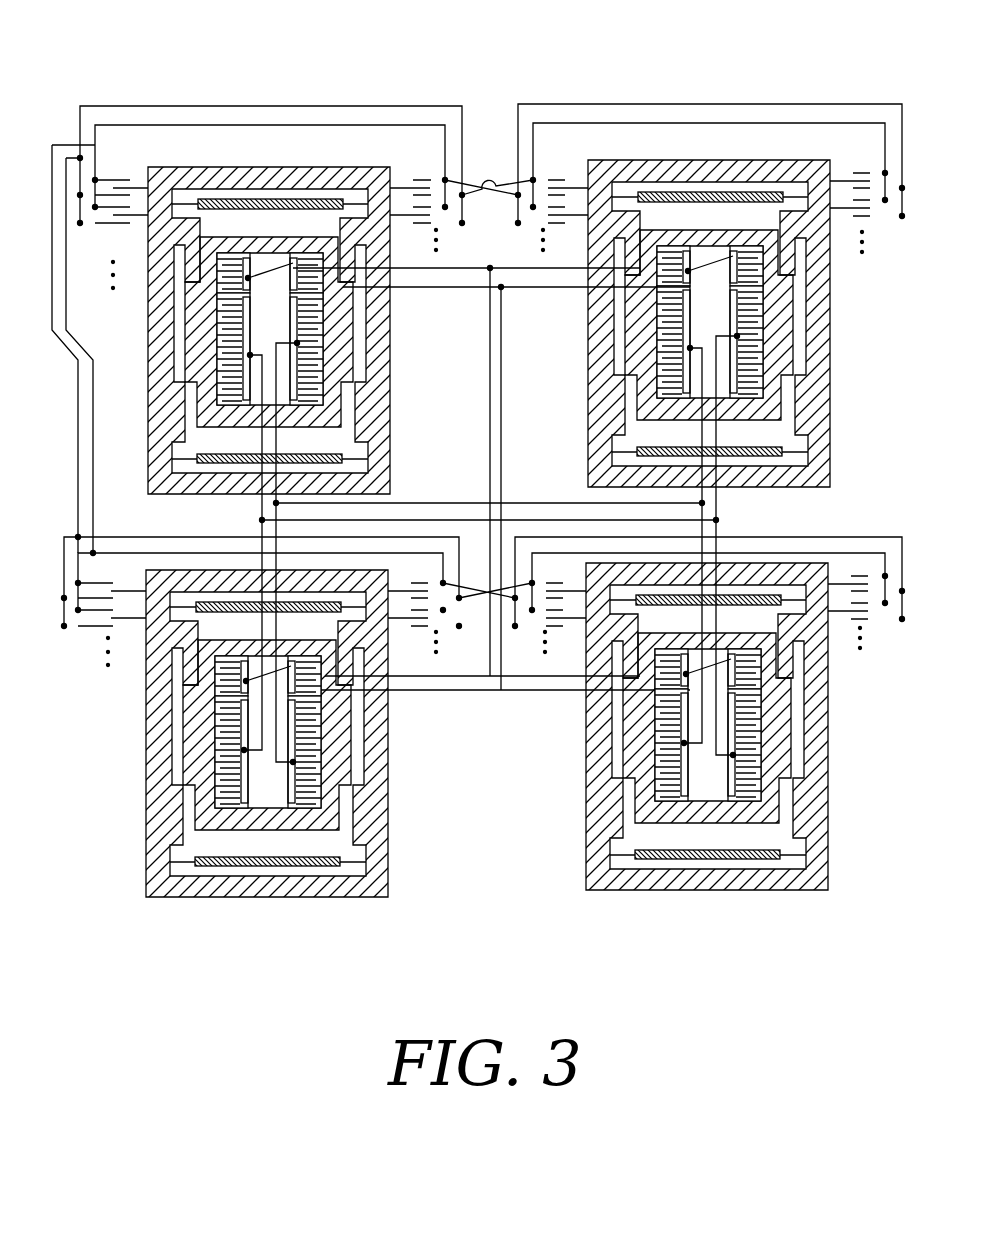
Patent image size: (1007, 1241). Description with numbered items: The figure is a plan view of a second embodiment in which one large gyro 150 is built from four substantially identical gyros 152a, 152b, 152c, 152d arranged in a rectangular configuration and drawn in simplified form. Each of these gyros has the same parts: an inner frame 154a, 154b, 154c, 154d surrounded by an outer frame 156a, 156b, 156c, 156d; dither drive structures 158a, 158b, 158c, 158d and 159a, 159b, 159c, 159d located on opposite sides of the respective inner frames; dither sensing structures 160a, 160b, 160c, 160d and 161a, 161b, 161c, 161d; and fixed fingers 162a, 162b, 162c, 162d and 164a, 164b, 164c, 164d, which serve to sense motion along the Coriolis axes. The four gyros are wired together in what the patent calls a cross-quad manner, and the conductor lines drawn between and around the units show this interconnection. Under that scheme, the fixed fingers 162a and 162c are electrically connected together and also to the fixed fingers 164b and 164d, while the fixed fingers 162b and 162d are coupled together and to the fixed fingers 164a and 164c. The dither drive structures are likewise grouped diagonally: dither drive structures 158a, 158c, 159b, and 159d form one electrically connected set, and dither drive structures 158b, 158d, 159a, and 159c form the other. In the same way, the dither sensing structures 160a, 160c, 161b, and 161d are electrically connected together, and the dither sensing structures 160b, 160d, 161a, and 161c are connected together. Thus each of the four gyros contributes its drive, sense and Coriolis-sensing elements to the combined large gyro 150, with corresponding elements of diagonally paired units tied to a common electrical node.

The large gyro 150 is at (544, 38).
The gyro 152a is at (354, 84).
The gyro 152b is at (257, 912).
The gyro 152c is at (675, 912).
The gyro 152d is at (742, 82).
The inner frame 154a is at (243, 240).
The inner frame 154b is at (290, 648).
The inner frame 154c is at (738, 642).
The inner frame 154d is at (730, 232).
The outer frame 156a is at (392, 352).
The outer frame 156b is at (392, 760).
The outer frame 156c is at (830, 762).
The outer frame 156d is at (832, 340).
The dither drive structure 158a is at (343, 241).
The dither drive structure 158b is at (217, 668).
The dither drive structure 158c is at (655, 702).
The dither drive structure 158d is at (590, 250).
The dither drive structure 159a is at (293, 263).
The dither drive structure 159b is at (297, 677).
The dither drive structure 159c is at (730, 655).
The dither drive structure 159d is at (740, 252).
The dither sensing structure 160a is at (217, 302).
The dither sensing structure 160b is at (215, 727).
The dither sensing structure 160c is at (655, 782).
The dither sensing structure 160d is at (655, 305).
The dither sensing structure 161a is at (325, 322).
The dither sensing structure 161b is at (300, 778).
The dither sensing structure 161c is at (730, 785).
The dither sensing structure 161d is at (770, 292).
The fixed fingers 162a is at (95, 145).
The fixed fingers 162b is at (78, 583).
The fixed fingers 162c is at (885, 576).
The fixed fingers 162d is at (885, 173).
The fixed fingers 164a is at (80, 197).
The fixed fingers 164b is at (64, 626).
The fixed fingers 164c is at (902, 591).
The fixed fingers 164d is at (902, 188).